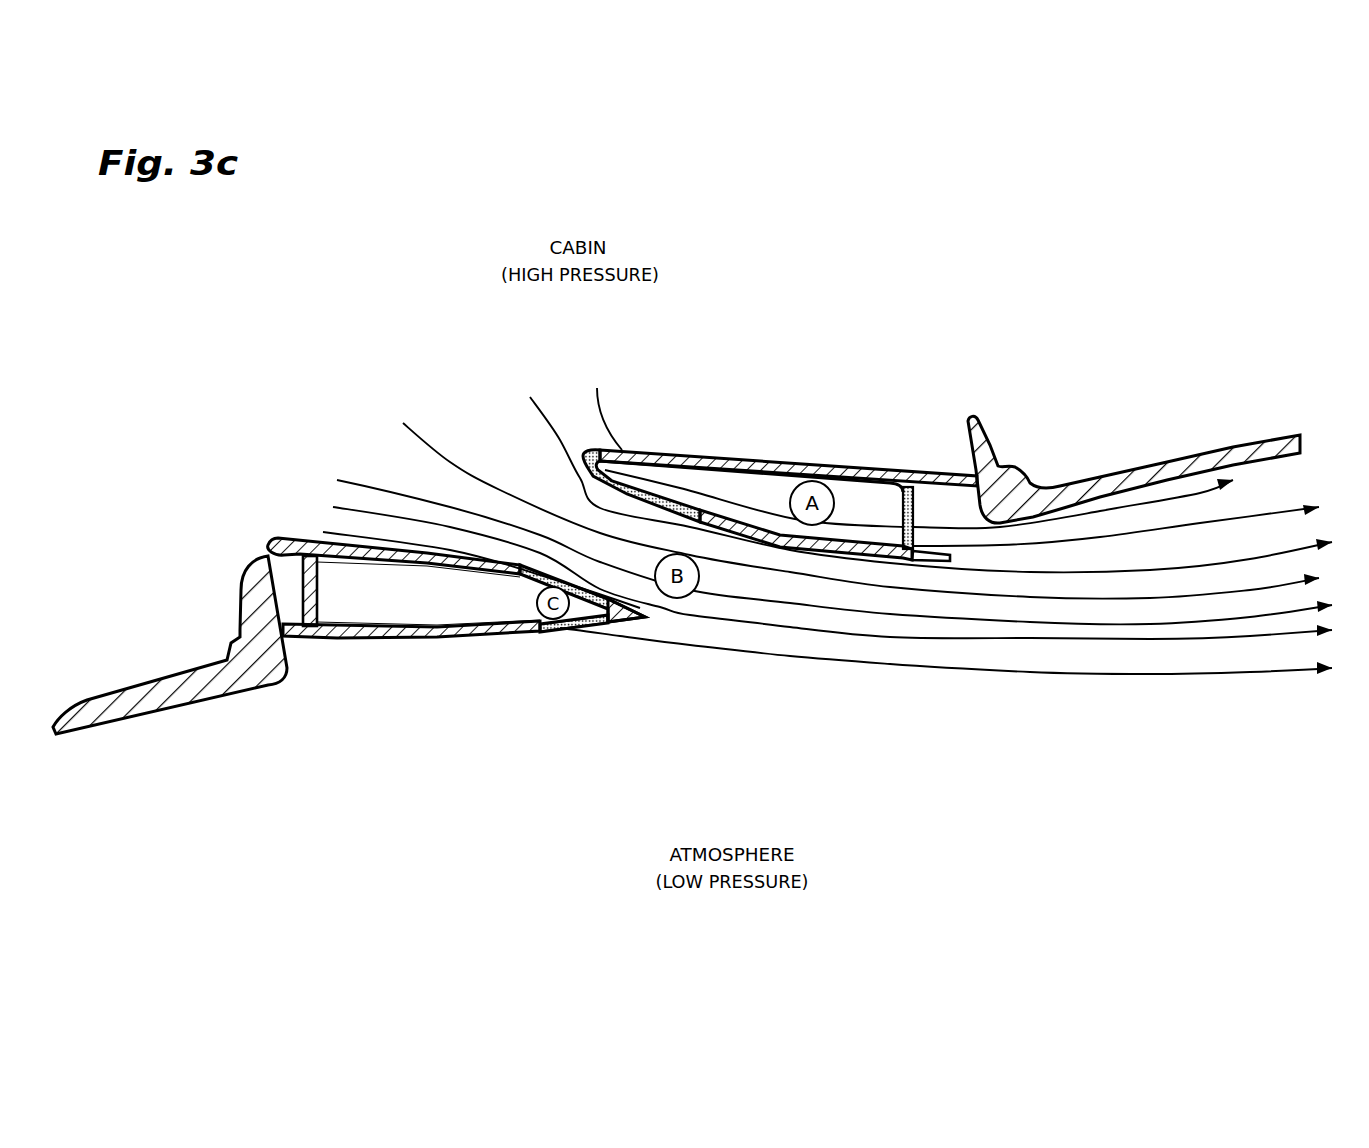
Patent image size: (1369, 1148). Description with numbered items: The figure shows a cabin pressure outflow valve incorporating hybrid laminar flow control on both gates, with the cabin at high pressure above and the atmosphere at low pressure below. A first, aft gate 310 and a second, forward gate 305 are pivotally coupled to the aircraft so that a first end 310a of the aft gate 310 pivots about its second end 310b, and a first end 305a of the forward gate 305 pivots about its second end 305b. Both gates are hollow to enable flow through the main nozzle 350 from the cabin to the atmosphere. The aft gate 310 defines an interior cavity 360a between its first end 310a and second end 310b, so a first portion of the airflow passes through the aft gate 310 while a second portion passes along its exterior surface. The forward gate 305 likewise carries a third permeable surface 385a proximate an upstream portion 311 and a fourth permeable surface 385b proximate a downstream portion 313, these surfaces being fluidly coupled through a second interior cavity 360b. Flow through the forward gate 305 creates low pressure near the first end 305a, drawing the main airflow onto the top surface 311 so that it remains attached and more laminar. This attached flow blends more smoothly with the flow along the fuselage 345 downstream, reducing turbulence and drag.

The forward gate 305 is at (512, 641).
The first end of the forward gate 305a is at (665, 620).
The second end of the forward gate 305b is at (303, 640).
The aft gate 310 is at (890, 433).
The first end of the aft gate 310a is at (596, 440).
The second end of the aft gate 310b is at (945, 505).
The upstream portion of the forward gate 311 is at (427, 552).
The downstream portion of the forward gate 313 is at (513, 640).
The fuselage 345 is at (676, 588).
The main nozzle 350 is at (378, 478).
The interior cavity 360a is at (851, 503).
The second interior cavity 360b is at (404, 606).
The third permeable surface 385a is at (528, 584).
The fourth permeable surface 385b is at (584, 636).